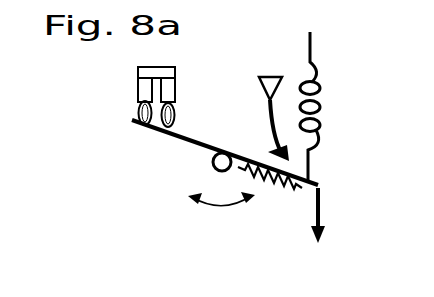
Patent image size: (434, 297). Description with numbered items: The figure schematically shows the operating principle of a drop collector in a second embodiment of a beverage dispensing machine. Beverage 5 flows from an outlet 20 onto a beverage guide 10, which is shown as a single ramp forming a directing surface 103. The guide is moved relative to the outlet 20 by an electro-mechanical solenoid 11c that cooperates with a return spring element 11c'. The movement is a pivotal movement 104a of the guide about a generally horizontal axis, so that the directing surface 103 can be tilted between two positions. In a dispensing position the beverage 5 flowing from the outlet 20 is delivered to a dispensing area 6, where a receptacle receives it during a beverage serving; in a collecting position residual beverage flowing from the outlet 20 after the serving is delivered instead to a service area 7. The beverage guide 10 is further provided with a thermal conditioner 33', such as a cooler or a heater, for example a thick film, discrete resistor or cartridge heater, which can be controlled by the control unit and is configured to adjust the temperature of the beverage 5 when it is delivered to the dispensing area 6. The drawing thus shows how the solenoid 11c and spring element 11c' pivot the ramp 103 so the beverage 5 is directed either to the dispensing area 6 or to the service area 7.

The beverage guide 10 is at (210, 102).
The electro-mechanical solenoid 11c is at (106, 93).
The return spring element 11c' is at (353, 107).
The directing surface 103 is at (155, 128).
The pivoting movement 104a is at (227, 208).
The outlet 20 is at (272, 83).
The beverage 5 is at (263, 120).
The thermal conditioner 33' is at (270, 230).
The dispensing area 6 is at (309, 259).
The service area 7 is at (109, 229).